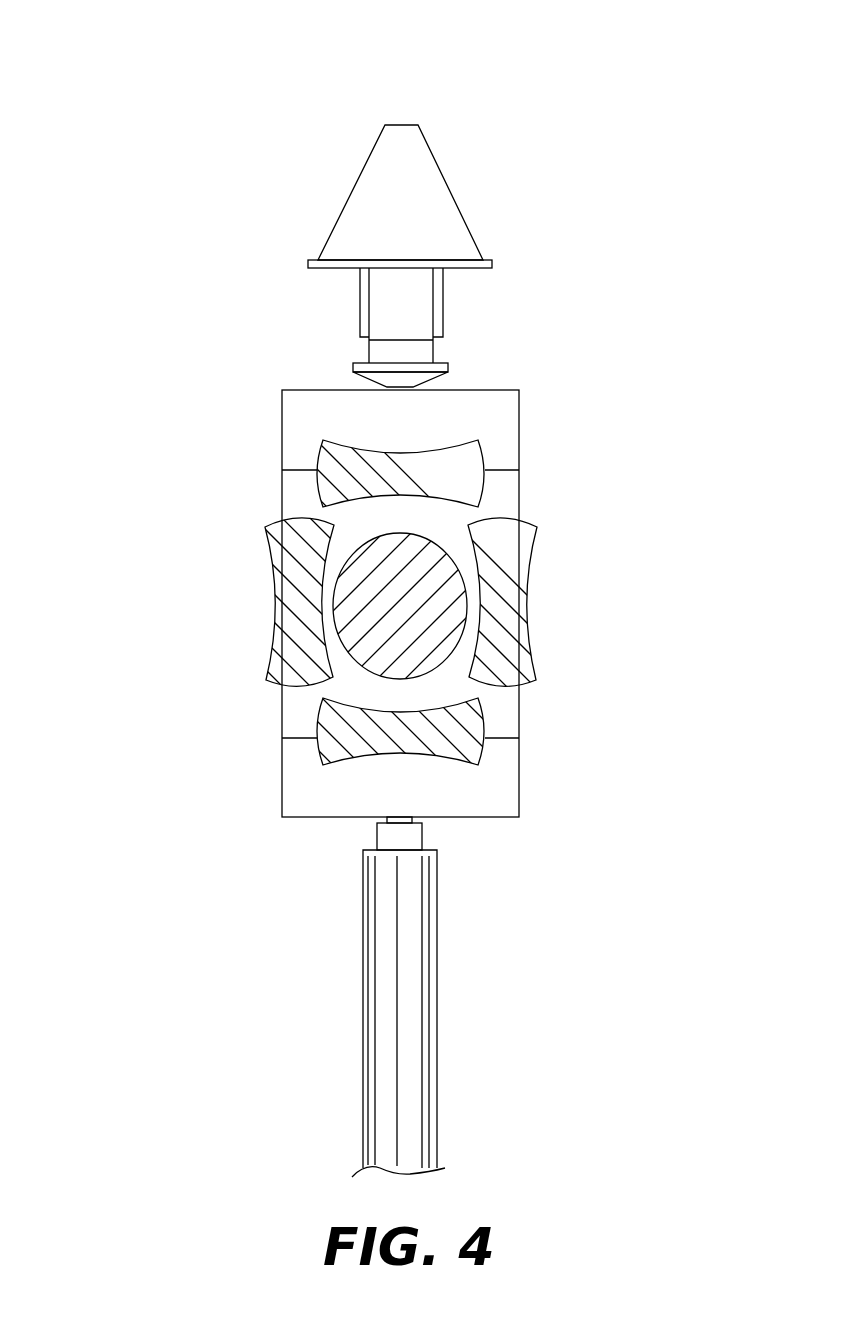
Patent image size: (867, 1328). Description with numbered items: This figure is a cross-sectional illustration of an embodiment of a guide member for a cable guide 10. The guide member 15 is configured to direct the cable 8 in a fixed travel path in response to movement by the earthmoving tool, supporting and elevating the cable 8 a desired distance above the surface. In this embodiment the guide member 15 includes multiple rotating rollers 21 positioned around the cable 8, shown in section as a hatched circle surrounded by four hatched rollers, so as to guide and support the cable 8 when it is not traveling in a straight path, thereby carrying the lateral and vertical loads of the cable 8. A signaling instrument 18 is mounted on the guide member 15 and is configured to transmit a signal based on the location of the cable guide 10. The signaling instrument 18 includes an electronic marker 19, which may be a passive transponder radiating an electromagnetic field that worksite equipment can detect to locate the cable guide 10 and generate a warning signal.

The cable guide 10 is at (609, 132).
The signaling instrument 18 is at (210, 187).
The electronic marker 19 is at (450, 223).
The guide member 15 is at (210, 796).
The rotating rollers 21 is at (473, 480).
The cable 8 is at (465, 583).